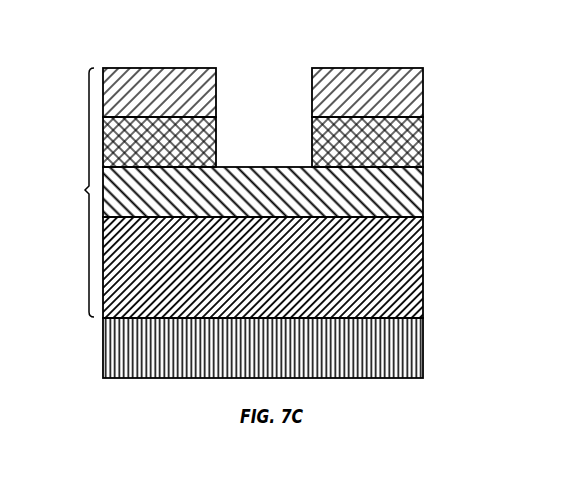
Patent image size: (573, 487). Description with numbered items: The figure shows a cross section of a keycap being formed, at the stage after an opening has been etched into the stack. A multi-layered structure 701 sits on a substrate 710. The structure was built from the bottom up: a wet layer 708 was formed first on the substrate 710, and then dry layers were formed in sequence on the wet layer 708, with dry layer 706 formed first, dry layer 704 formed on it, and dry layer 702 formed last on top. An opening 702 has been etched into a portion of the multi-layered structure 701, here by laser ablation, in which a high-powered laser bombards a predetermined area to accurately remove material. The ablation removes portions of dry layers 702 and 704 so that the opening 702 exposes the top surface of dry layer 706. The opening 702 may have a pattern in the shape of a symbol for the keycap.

The multi-layered structure 701 is at (70, 192).
The dry layer / opening 702 is at (266, 82).
The dry layer 704 is at (424, 132).
The dry layer 706 is at (424, 192).
The wet layer 708 is at (424, 272).
The substrate 710 is at (424, 349).